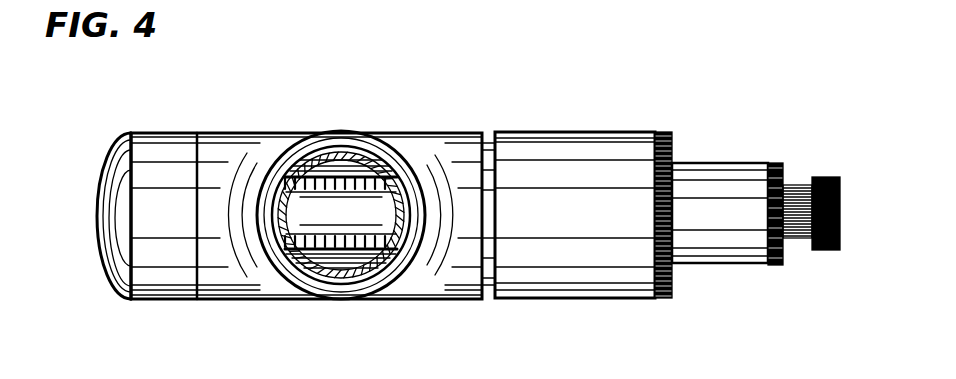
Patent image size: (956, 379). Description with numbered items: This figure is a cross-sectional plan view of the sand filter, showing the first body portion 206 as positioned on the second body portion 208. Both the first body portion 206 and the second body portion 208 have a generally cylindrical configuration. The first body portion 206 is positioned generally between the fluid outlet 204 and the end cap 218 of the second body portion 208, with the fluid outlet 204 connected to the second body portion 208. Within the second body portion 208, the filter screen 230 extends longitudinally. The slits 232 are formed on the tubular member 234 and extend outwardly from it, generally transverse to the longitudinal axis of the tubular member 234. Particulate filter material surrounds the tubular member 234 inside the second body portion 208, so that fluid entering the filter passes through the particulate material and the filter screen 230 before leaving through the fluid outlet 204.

The fluid outlet 204 is at (803, 248).
The first body portion 206 is at (288, 145).
The second body portion 208 is at (580, 132).
The end cap 218 is at (106, 227).
The filter screen 230 is at (355, 260).
The slits 232 is at (336, 180).
The tubular member 234 is at (323, 223).